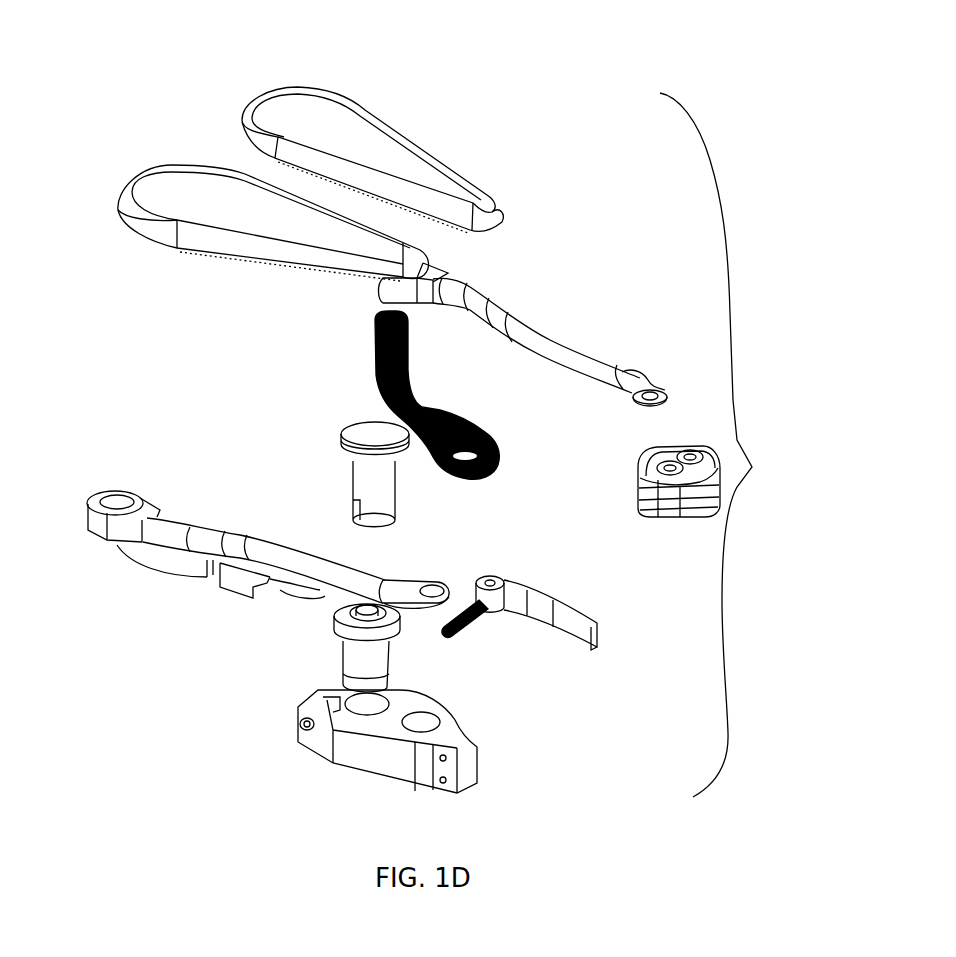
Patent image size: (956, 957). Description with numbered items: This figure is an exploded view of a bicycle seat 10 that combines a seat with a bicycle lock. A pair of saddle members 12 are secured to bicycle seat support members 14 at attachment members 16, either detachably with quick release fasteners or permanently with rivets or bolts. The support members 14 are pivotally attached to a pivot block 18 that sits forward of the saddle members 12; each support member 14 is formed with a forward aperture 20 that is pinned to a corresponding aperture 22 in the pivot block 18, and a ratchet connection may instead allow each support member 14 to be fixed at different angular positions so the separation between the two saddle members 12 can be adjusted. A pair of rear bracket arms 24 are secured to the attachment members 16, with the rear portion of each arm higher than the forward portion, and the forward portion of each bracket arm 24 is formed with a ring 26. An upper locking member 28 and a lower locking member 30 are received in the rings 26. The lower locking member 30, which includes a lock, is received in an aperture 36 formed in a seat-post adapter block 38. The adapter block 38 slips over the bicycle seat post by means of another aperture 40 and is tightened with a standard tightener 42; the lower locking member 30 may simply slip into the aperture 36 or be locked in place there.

The bicycle seat 10 is at (722, 445).
The saddle members 12 is at (188, 175).
The bicycle seat support members 14 is at (548, 340).
The attachment members 16 is at (380, 291).
The pivot block 18 is at (679, 486).
The forward aperture 20 is at (653, 394).
The aperture 22 is at (691, 455).
The rear bracket arms 24 is at (324, 470).
The ring 26 is at (474, 441).
The upper locking member 28 is at (356, 432).
The lower locking member 30 is at (345, 658).
The aperture 36 is at (366, 705).
The seat-post adapter block 38 is at (378, 747).
The aperture 40 is at (426, 720).
The tightener 42 is at (541, 600).